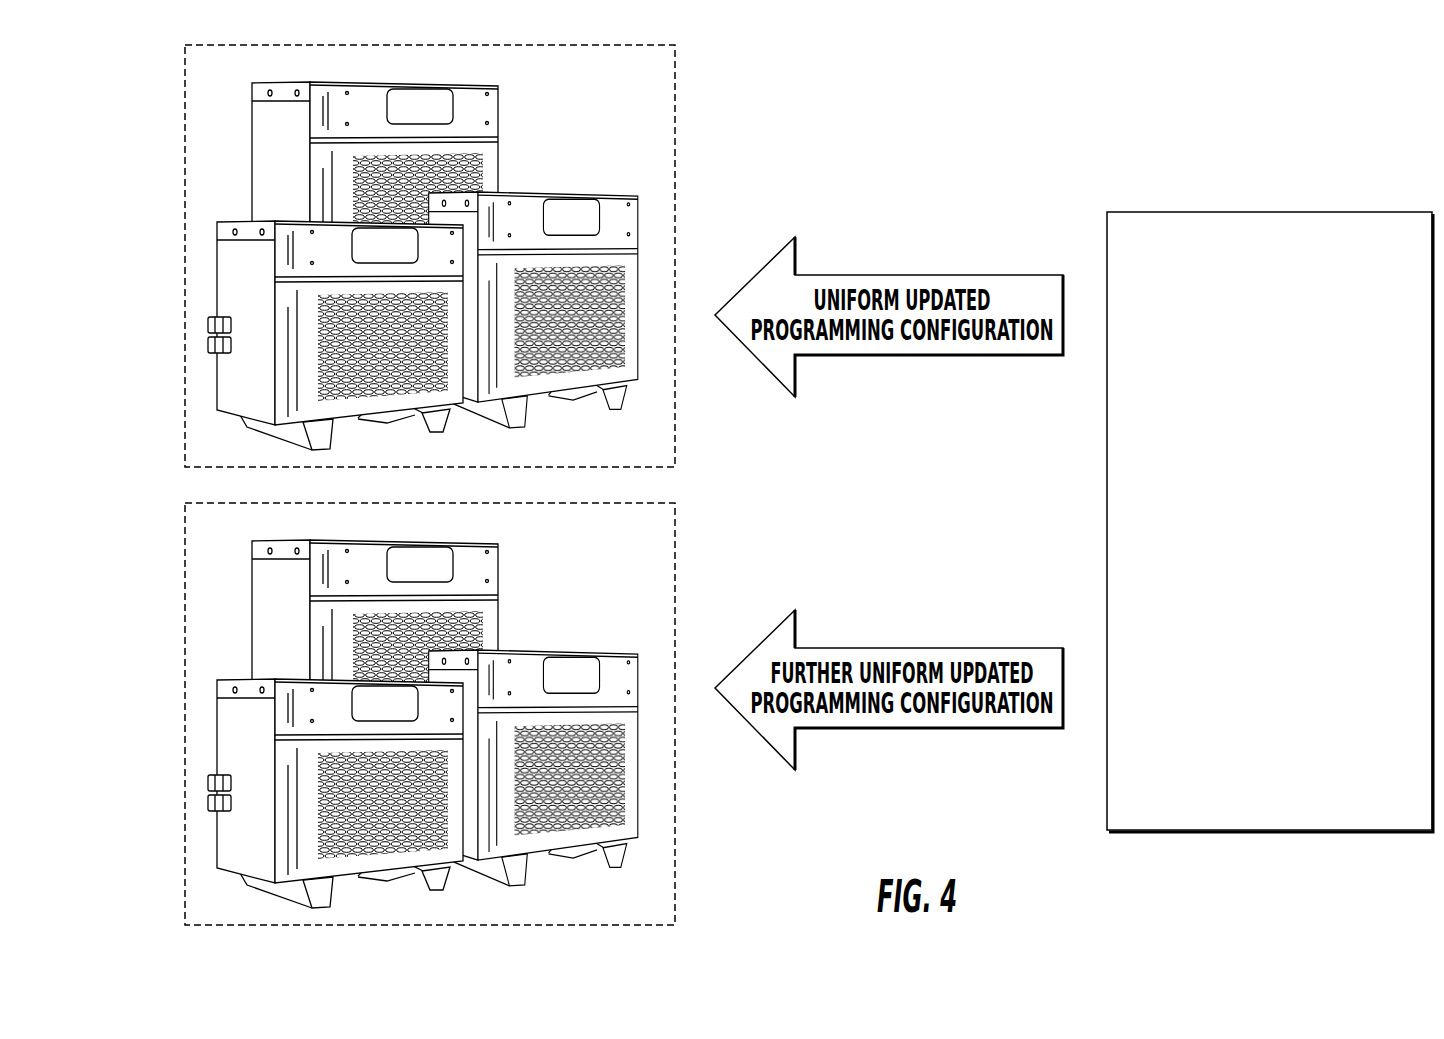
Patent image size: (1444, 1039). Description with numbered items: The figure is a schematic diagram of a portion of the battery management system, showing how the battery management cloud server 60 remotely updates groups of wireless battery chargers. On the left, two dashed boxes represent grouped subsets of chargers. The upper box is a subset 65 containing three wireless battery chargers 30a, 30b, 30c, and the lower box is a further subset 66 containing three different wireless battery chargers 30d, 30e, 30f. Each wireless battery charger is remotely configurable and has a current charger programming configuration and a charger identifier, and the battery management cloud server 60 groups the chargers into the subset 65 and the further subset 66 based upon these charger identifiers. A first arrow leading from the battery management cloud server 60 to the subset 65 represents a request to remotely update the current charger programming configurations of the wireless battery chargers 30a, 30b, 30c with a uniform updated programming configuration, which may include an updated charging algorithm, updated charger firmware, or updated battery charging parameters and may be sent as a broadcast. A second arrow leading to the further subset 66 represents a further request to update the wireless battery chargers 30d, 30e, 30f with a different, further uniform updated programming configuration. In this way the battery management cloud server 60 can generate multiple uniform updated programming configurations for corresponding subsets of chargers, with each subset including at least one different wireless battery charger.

The wireless battery charger 30a is at (218, 288).
The wireless battery charger 30b is at (255, 182).
The wireless battery charger 30c is at (540, 208).
The wireless battery charger 30d is at (298, 793).
The wireless battery charger 30e is at (350, 654).
The wireless battery charger 30f is at (533, 738).
The battery management cloud server 60 is at (1256, 204).
The subset 65 is at (185, 93).
The further subset 66 is at (185, 578).